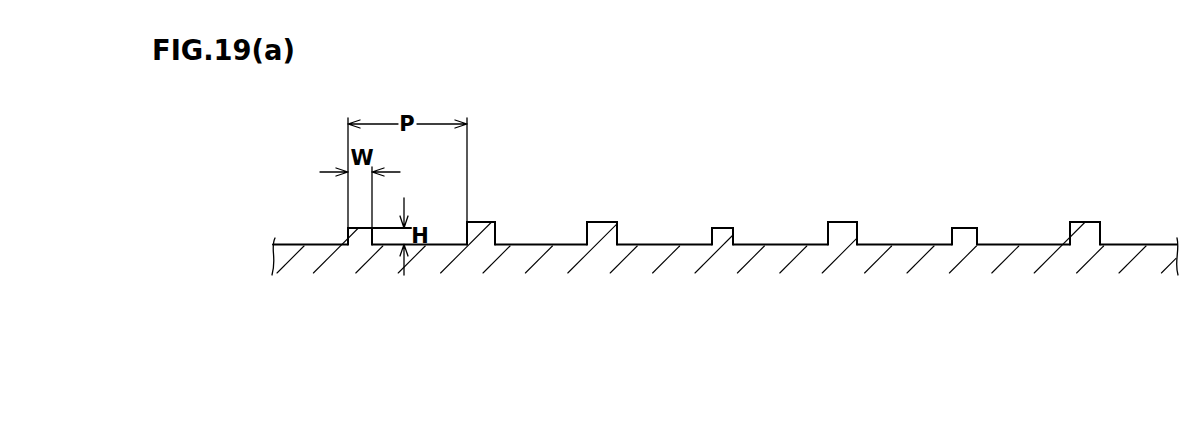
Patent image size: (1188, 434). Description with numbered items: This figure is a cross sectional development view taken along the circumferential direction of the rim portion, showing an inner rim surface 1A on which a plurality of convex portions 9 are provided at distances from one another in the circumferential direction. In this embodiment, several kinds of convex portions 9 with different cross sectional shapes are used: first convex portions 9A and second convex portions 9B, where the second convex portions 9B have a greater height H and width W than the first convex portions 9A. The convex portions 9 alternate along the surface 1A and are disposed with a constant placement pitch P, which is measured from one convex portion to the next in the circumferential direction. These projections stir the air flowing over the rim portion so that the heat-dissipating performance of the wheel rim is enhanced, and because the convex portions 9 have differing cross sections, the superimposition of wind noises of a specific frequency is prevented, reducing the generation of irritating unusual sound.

The substrate surface 1A is at (906, 243).
The convex portion 9 is at (711, 299).
The first convex portion 9A is at (362, 235).
The second convex portion 9B is at (483, 233).